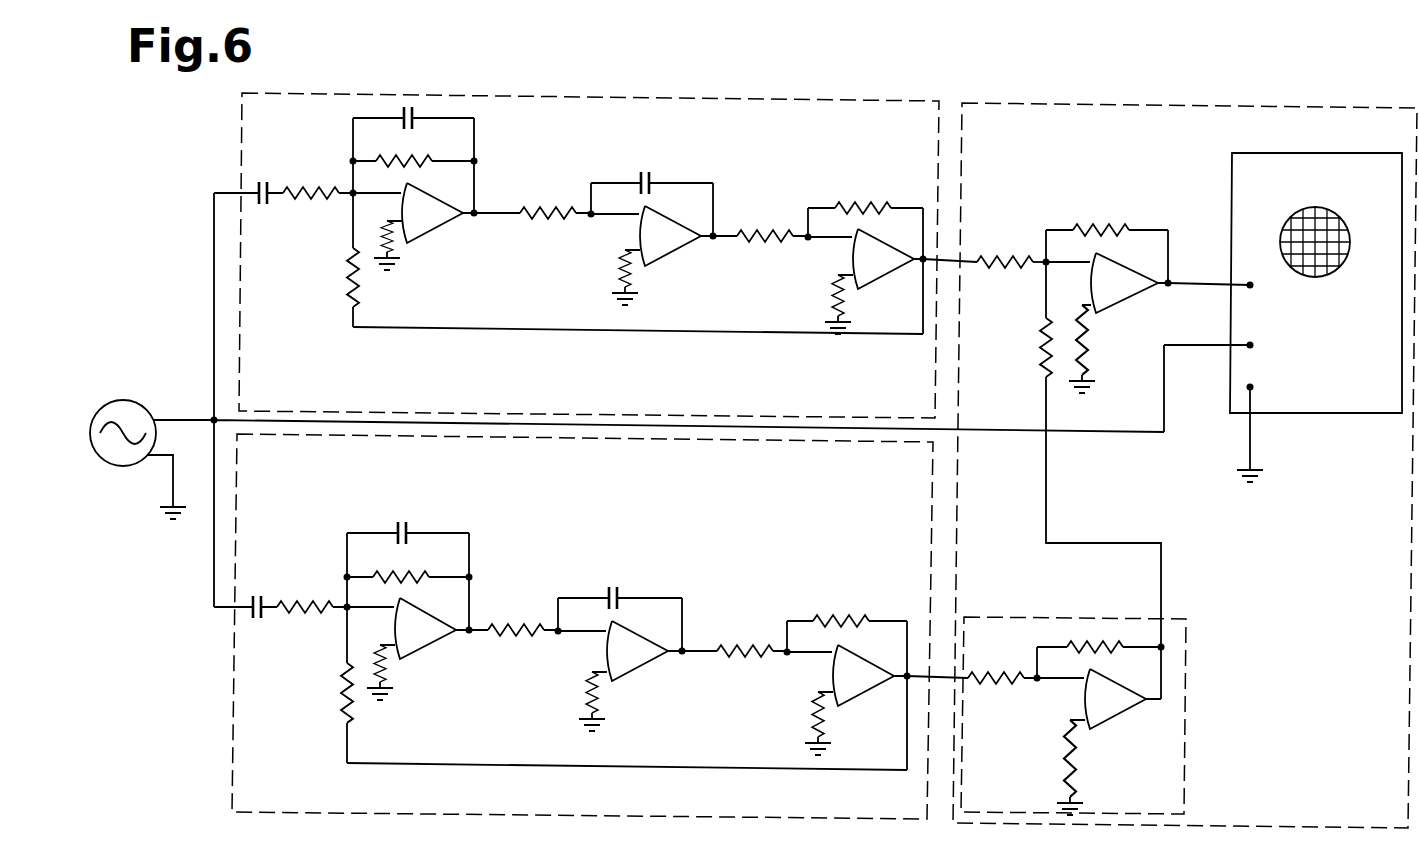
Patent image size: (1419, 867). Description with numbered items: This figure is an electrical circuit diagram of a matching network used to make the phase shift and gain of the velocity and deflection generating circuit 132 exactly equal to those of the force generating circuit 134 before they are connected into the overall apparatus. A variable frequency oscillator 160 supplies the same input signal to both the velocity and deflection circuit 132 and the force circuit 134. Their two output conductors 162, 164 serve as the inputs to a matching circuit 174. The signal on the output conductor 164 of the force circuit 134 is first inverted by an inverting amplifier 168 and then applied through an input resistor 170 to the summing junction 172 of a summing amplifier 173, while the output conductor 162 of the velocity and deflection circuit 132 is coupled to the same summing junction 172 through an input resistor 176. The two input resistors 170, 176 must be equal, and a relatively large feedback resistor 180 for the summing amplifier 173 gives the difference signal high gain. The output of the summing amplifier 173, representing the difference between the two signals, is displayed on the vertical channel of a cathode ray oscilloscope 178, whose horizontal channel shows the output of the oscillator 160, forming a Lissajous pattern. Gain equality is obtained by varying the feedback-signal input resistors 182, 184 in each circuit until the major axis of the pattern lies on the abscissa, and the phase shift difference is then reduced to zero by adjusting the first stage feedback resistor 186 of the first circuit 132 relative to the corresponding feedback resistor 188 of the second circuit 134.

The velocity and deflection generating circuit 132 is at (553, 92).
The force generating circuit 134 is at (233, 682).
The variable frequency oscillator 160 is at (145, 410).
The output conductor 162 is at (950, 262).
The output conductor 164 is at (920, 674).
The inverting amplifier 168 is at (1187, 700).
The input resistor 170 is at (1041, 352).
The summing junction 172 is at (1048, 266).
The summing amplifier 173 is at (1129, 302).
The matching circuit 174 is at (1165, 103).
The input resistor 176 is at (1000, 270).
The cathode ray oscilloscope 178 is at (1232, 200).
The feedback resistor 180 is at (1103, 228).
The input resistor 182 is at (360, 284).
The input resistor 184 is at (354, 695).
The first stage feedback resistor 186 is at (419, 162).
The feedback resistor 188 is at (414, 574).